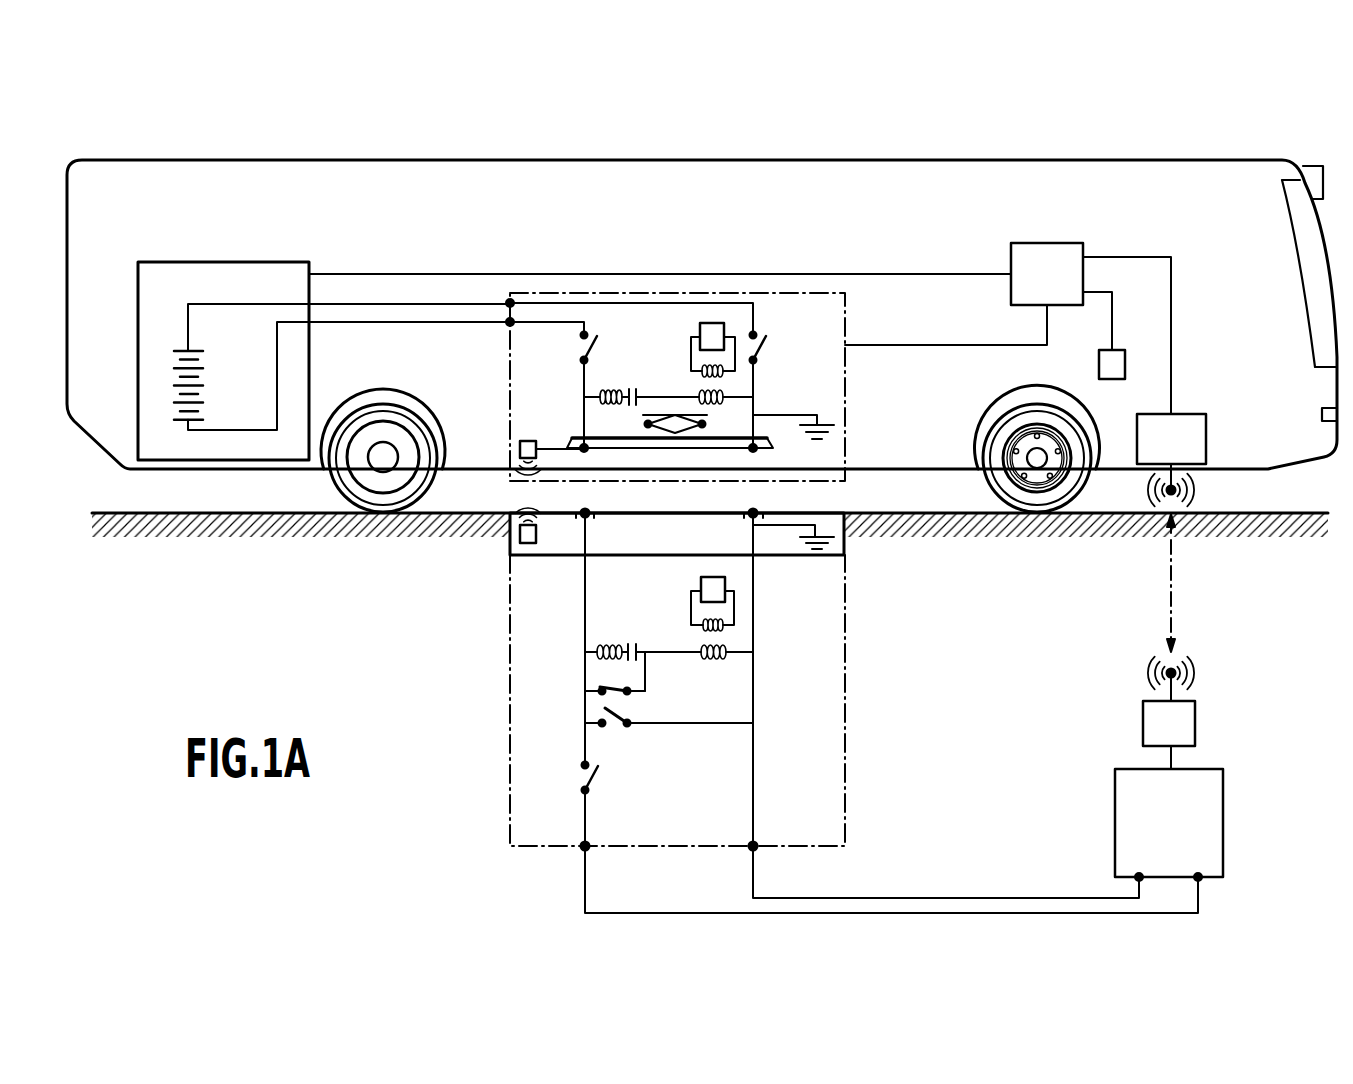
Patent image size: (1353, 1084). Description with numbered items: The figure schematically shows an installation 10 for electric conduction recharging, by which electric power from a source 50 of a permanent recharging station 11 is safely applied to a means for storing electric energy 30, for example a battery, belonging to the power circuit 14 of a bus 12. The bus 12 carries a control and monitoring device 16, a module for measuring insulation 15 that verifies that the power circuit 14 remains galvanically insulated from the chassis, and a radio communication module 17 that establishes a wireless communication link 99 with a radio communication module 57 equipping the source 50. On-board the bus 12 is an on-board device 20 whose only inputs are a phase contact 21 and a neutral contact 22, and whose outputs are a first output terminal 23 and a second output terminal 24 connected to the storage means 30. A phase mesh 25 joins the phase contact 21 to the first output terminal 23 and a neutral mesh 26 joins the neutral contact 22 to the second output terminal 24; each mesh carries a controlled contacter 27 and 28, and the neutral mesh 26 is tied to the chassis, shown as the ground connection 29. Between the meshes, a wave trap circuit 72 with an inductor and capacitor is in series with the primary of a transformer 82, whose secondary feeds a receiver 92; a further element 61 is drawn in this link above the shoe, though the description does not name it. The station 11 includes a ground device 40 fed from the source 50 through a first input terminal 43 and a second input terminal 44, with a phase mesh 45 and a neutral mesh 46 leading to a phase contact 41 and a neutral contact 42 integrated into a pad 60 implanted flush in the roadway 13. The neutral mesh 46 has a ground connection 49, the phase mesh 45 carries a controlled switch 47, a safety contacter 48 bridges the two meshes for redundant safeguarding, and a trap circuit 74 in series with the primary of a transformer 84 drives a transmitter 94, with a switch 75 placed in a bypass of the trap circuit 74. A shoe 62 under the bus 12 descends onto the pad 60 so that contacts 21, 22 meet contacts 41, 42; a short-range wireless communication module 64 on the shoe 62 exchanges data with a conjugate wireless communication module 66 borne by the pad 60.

The installation 10 is at (388, 557).
The permanent recharging station 11 is at (959, 771).
The bus 12 is at (1167, 150).
The roadway 13 is at (1288, 513).
The power circuit 14 is at (134, 434).
The module for measuring insulation 15 is at (1099, 362).
The control and monitoring device 16 is at (1008, 328).
The radio communication module 17 is at (1171, 460).
The on-board device 20 is at (503, 495).
The phase contact 21 is at (586, 452).
The neutral contact 22 is at (751, 452).
The first output terminal 23 is at (508, 324).
The second output terminal 24 is at (508, 303).
The phase mesh 25 is at (643, 362).
The neutral mesh 26 is at (755, 386).
The controlled contacter 27 is at (588, 350).
The controlled contacter 28 is at (763, 348).
The ground connection 29 is at (800, 415).
The means for storing electric energy 30 is at (161, 377).
The ground device 40 is at (499, 660).
The phase contact 41 is at (587, 515).
The neutral contact 42 is at (751, 515).
The first input terminal 43 is at (584, 848).
The second input terminal 44 is at (752, 848).
The phase mesh 45 is at (642, 742).
The neutral mesh 46 is at (754, 772).
The controlled switch 47 is at (587, 778).
The safety contacter 48 is at (613, 718).
The ground connection 49 is at (784, 528).
The source 50 is at (1221, 765).
The radio communication module 57 is at (1169, 713).
The pad 60 is at (845, 550).
The measuring device 61 is at (706, 427).
The shoe 62 is at (770, 441).
The wireless communication module 64 is at (520, 445).
The wireless communication module 66 is at (533, 544).
The wave trap circuit 72 is at (611, 382).
The trap circuit 74 is at (609, 639).
The switch 75 is at (598, 688).
The transformer 82 is at (688, 383).
The transformer 84 is at (737, 636).
The receiver 92 is at (703, 330).
The transmitter 94 is at (703, 585).
The wireless communication link 99 is at (1172, 592).